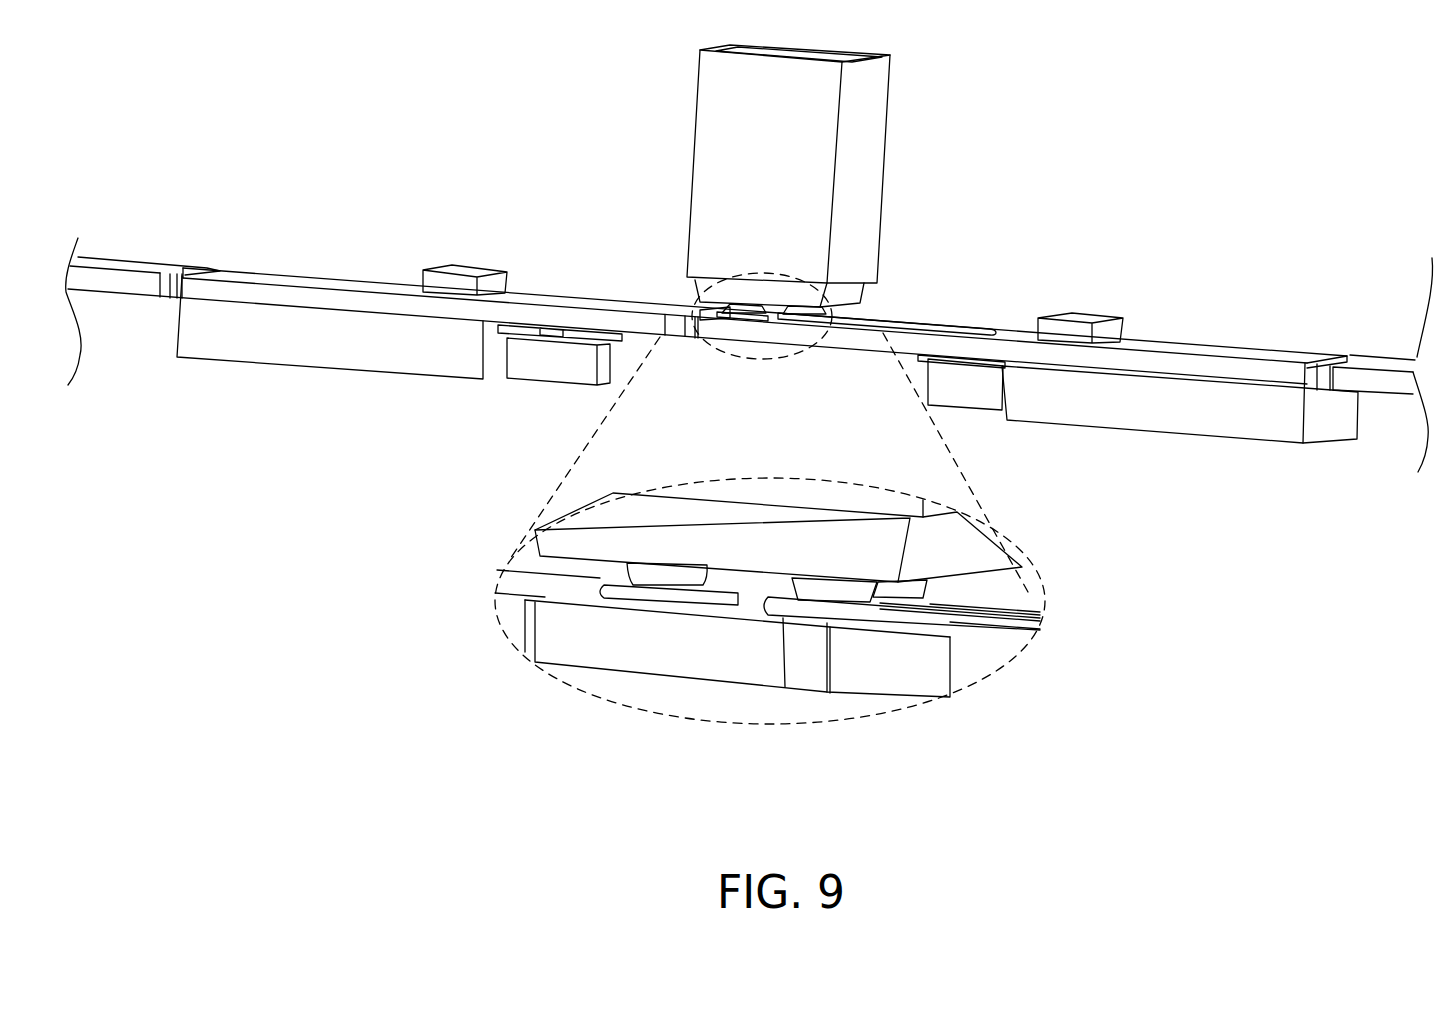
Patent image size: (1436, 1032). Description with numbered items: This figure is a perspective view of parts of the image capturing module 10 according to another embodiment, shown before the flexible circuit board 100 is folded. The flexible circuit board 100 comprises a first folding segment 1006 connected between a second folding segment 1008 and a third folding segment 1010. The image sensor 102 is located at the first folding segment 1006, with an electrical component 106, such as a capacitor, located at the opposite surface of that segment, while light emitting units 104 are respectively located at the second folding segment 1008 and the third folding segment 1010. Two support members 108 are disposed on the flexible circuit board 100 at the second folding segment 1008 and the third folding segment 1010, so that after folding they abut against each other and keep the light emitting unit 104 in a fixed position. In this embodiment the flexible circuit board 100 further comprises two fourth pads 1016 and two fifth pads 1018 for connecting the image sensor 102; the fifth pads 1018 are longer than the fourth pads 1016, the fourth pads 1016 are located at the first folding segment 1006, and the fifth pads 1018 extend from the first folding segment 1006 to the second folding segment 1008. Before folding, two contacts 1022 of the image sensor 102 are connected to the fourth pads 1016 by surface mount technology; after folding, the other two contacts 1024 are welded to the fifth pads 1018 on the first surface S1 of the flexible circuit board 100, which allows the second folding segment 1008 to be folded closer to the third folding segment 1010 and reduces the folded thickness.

The image capturing module 10 is at (293, 115).
The flexible circuit board 100 is at (150, 255).
The third folding segment 1010 is at (337, 270).
The light emitting unit 104 is at (467, 265).
The image sensor 102 is at (867, 118).
The first surface S1 is at (1200, 345).
The second folding segment 1008 is at (1258, 350).
The support member 108 is at (285, 352).
The electrical component 106 is at (552, 367).
The first folding segment 1006 is at (738, 335).
The contacts 1022 is at (657, 575).
The other contacts 1024 is at (833, 587).
The fourth pads 1016 is at (678, 602).
The fifth pads 1018 is at (907, 618).